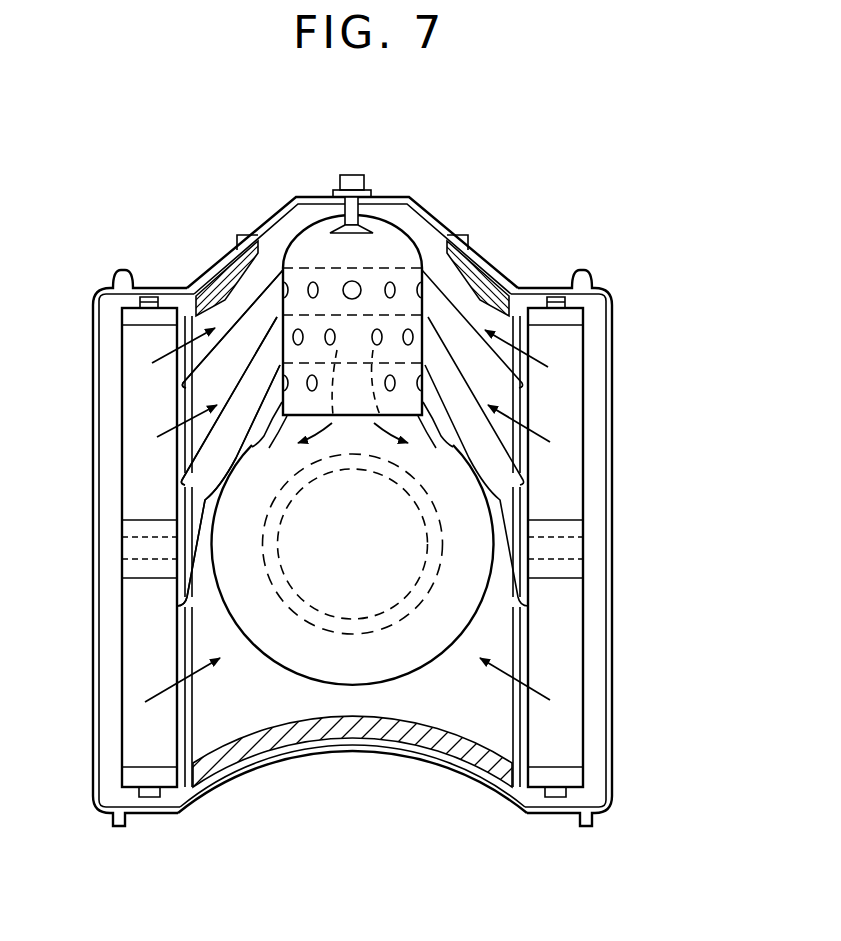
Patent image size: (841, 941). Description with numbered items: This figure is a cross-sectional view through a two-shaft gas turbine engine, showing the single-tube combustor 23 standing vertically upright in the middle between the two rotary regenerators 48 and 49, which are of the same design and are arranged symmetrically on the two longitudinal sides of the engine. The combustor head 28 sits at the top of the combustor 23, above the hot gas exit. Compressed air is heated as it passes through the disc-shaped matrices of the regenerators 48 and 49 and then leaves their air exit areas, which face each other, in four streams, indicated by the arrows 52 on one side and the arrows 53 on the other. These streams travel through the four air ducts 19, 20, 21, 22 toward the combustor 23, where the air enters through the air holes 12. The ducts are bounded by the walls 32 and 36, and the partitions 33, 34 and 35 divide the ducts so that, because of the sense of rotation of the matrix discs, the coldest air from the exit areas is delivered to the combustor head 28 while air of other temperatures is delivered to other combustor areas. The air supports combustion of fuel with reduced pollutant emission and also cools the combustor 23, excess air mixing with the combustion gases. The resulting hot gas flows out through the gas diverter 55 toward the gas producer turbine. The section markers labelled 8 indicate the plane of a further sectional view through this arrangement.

The section line 8- 8 is at (521, 205).
The air holes 12 is at (382, 380).
The air duct 19 is at (265, 288).
The air duct 20 is at (233, 389).
The air duct 21 is at (227, 463).
The air duct 22 is at (228, 642).
The combustor 23 is at (397, 250).
The combustor head 28 is at (313, 243).
The wall 32 is at (225, 257).
The partition 33 is at (246, 318).
The partition 34 is at (262, 397).
The partition 35 is at (238, 440).
The wall 36 is at (256, 742).
The rotary regenerator 48 is at (137, 477).
The rotary regenerator 49 is at (572, 475).
The arrows 52 is at (168, 433).
The arrows 53 is at (548, 365).
The gas diverter 55 is at (478, 513).